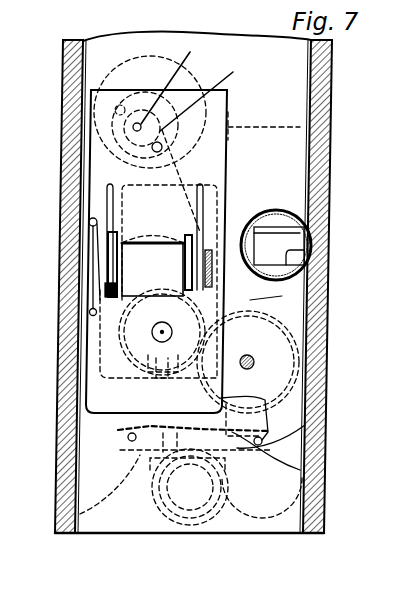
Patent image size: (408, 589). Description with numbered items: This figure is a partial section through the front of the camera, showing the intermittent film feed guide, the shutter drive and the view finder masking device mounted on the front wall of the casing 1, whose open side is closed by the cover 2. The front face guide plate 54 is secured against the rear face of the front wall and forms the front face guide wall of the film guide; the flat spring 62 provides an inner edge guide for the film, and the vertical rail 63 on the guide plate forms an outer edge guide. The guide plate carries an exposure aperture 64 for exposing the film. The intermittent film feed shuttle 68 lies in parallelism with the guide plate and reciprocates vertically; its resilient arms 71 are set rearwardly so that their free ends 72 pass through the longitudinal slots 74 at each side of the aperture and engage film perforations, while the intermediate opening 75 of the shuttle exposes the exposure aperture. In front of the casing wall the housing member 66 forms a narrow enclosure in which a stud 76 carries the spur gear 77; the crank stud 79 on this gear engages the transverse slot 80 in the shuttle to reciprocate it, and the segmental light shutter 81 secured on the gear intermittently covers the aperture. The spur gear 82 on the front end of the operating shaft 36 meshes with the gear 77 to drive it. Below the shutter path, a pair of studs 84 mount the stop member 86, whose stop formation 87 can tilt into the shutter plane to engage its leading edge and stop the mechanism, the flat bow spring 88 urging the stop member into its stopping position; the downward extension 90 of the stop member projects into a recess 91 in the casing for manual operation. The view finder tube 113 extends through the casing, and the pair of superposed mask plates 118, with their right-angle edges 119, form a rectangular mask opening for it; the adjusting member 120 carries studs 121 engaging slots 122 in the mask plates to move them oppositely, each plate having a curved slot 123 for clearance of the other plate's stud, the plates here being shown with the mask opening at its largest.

The casing 1 is at (334, 84).
The cover 2 is at (76, 42).
The operating shaft 36 is at (254, 363).
The front face guide plate 54 is at (100, 398).
The flat spring 62 is at (282, 296).
The vertical rail 63 is at (93, 272).
The exposure aperture 64 is at (105, 288).
The housing member 66 is at (302, 127).
The intermittent film feed shuttle 68 is at (100, 168).
The resilient arms 71 is at (121, 205).
The free ends of arms 72 is at (93, 302).
The longitudinal slots 74 is at (111, 250).
The intermediate opening 75 is at (235, 127).
The stud 76 is at (152, 333).
The spur gear 77 is at (121, 339).
The crank stud 79 is at (161, 368).
The transverse slot 80 is at (147, 367).
The segmental light shutter 81 is at (118, 423).
The spur gear 82 is at (292, 333).
The studs 84 is at (264, 441).
The stop member 86 is at (268, 427).
The stop formation 87 is at (282, 400).
The flat bow spring 88 is at (305, 466).
The downward extension 90 is at (162, 508).
The recess 91 is at (222, 524).
The viewing tube 113 is at (298, 208).
The mask plates 118 is at (267, 194).
The edges 119 is at (307, 236).
The adjusting member 120 is at (112, 110).
The studs 121 is at (136, 122).
The slots 122 is at (178, 78).
The curved slot 123 is at (209, 143).